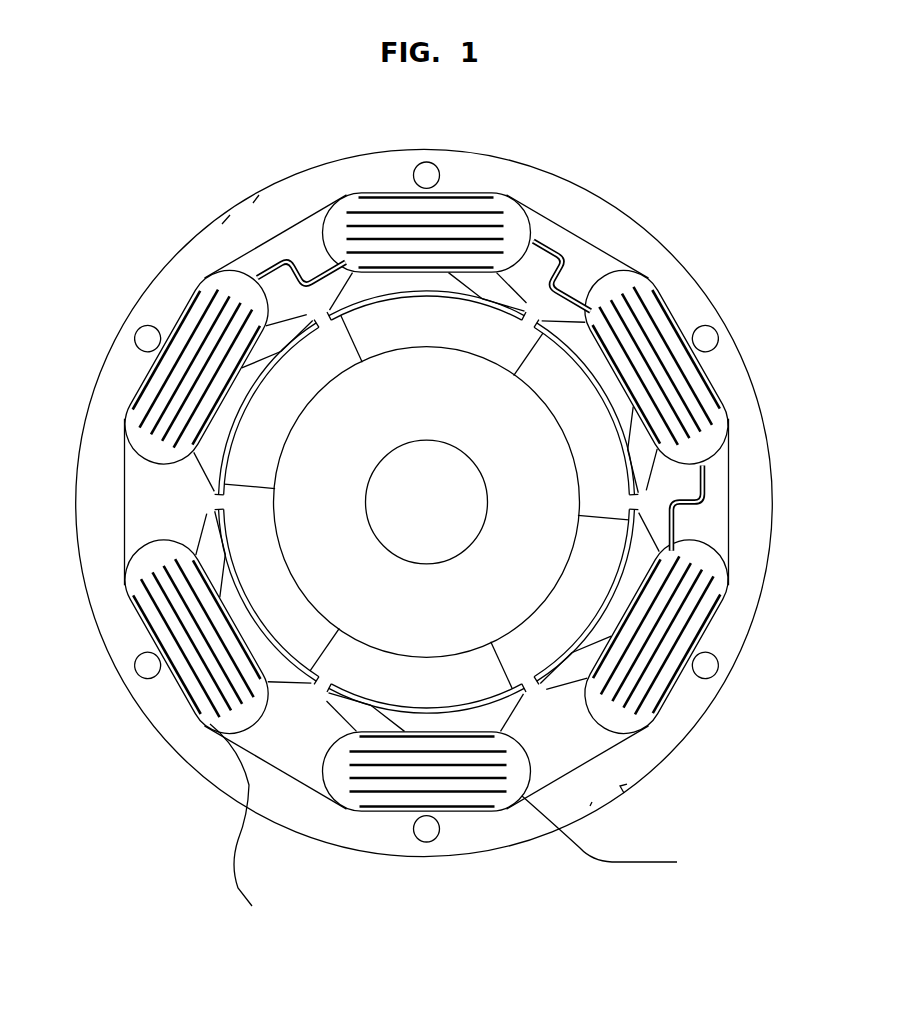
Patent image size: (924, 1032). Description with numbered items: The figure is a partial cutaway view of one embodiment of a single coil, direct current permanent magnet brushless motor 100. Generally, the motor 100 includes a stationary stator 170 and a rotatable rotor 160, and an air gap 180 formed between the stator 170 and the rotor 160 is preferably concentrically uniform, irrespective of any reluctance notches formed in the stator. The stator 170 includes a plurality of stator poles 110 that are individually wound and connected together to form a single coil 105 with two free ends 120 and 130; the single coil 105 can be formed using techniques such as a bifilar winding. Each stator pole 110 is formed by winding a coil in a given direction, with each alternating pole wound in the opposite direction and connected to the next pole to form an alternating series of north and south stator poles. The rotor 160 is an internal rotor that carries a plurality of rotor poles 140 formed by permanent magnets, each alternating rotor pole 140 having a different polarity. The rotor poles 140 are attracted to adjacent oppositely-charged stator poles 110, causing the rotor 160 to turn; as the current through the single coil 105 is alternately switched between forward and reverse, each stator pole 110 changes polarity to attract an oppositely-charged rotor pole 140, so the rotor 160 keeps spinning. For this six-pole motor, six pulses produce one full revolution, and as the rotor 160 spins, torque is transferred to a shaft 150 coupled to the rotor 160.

The single coil, direct current permanent magnet brushless motor 100 is at (674, 166).
The single coil 105 is at (205, 842).
The stator poles 110 is at (655, 330).
The free end 120 is at (598, 860).
The free end 130 is at (237, 876).
The rotor poles 140 is at (570, 402).
The shaft 150 is at (412, 474).
The rotor 160 is at (203, 497).
The stator 170 is at (786, 487).
The air gap 180 is at (246, 582).